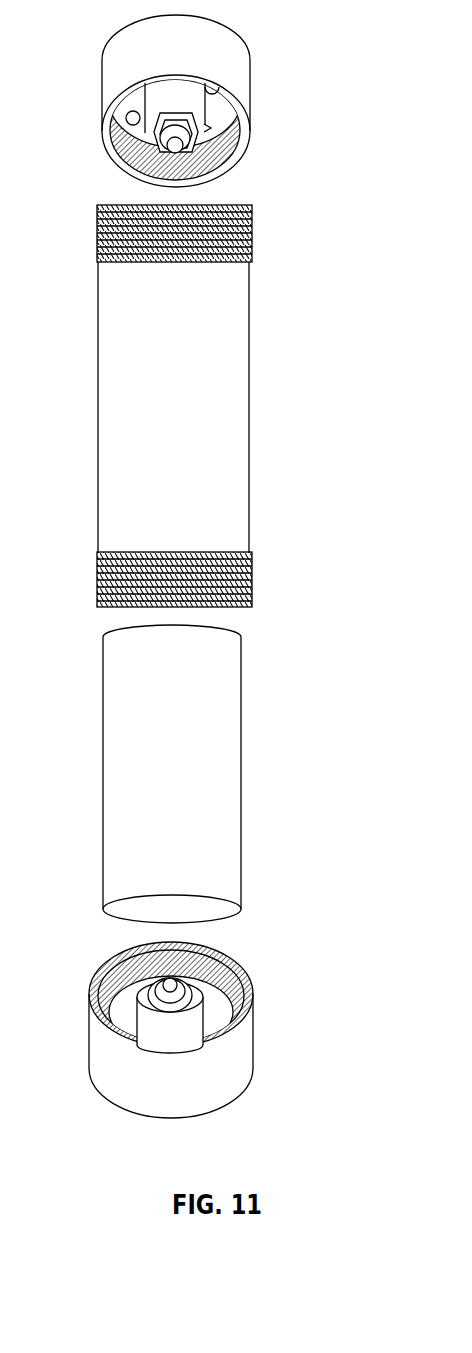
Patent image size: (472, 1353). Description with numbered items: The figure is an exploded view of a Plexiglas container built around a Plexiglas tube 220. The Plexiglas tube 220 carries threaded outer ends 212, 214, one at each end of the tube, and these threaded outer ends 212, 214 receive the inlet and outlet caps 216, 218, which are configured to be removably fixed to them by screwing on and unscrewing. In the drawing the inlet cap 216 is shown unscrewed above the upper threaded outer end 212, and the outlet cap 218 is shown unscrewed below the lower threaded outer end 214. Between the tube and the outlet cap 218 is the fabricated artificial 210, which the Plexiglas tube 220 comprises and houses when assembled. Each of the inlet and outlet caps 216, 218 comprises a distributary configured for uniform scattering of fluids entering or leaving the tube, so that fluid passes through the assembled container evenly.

The fabricated artificial 210 is at (218, 762).
The threaded outer end 212 is at (248, 227).
The threaded outer end 214 is at (250, 582).
The inlet cap 216 is at (243, 80).
The outlet cap 218 is at (233, 1032).
The Plexiglas tube 220 is at (238, 440).